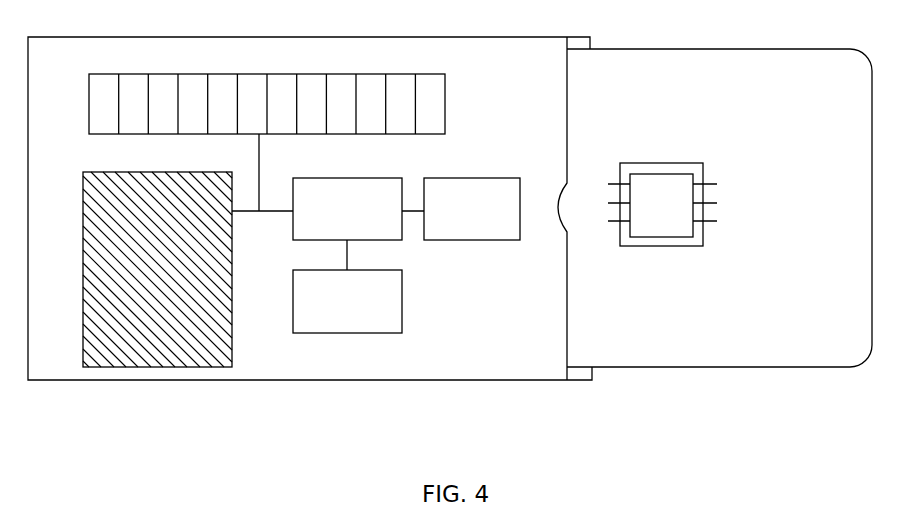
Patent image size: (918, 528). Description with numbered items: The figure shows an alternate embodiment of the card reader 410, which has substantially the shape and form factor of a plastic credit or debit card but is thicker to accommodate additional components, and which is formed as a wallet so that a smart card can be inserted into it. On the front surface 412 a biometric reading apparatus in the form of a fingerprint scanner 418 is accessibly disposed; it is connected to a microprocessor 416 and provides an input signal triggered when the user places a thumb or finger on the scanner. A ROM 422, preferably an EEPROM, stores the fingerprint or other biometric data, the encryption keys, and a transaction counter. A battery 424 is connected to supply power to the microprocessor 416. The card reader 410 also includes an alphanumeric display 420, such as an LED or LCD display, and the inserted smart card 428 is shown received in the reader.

The card reader 410 is at (58, 380).
The front surface 412 is at (492, 78).
The microprocessor 416 is at (292, 242).
The fingerprint scanner 418 is at (195, 367).
The display 420 is at (445, 128).
The ROM 422 is at (402, 303).
The battery 424 is at (505, 240).
The card 428 is at (683, 367).